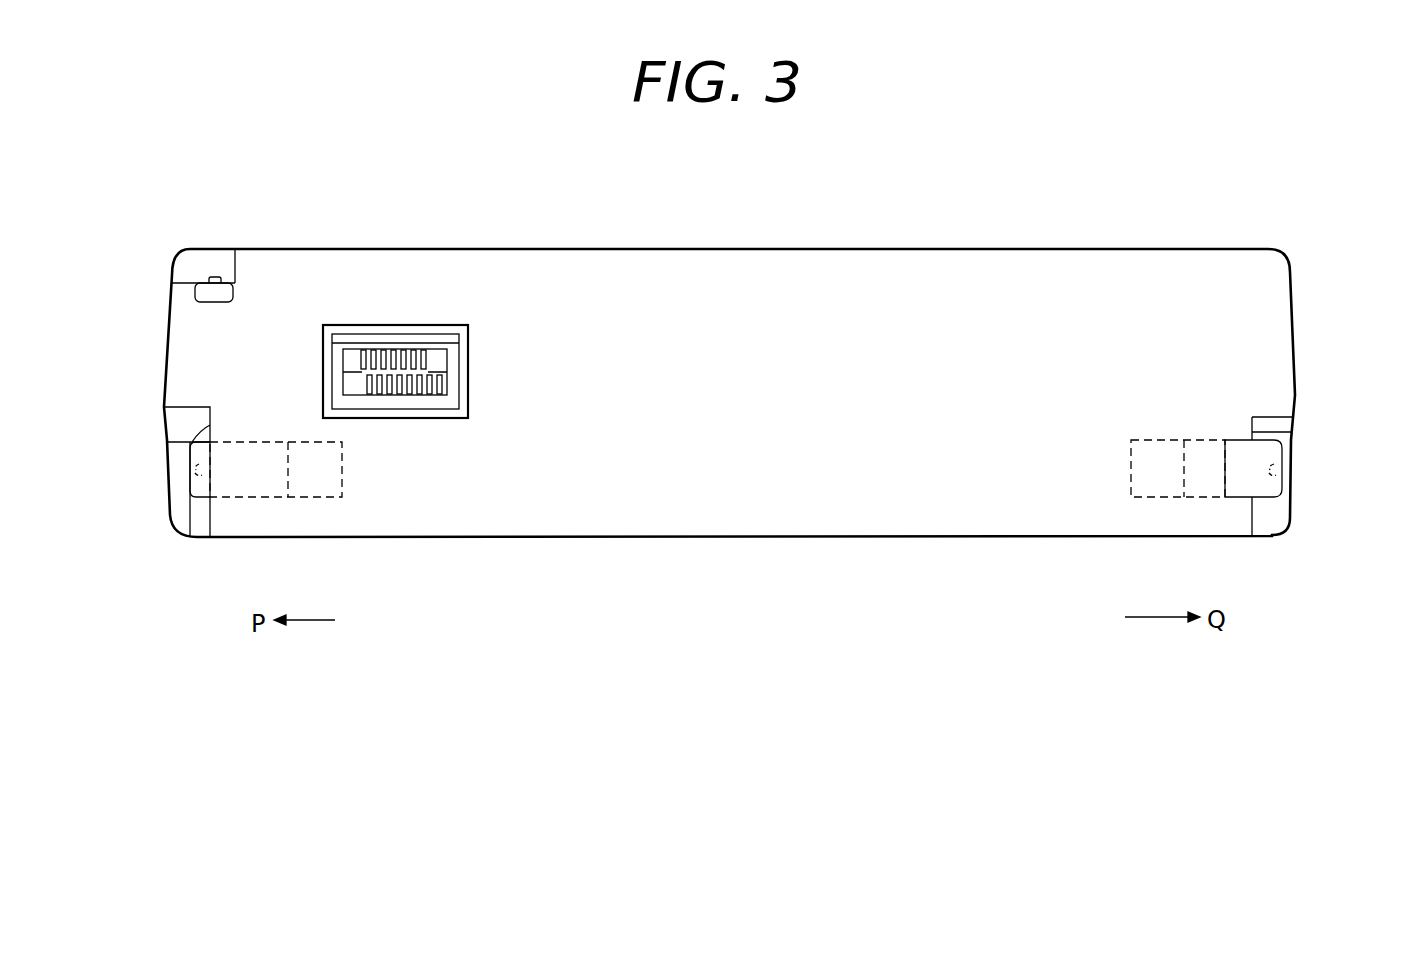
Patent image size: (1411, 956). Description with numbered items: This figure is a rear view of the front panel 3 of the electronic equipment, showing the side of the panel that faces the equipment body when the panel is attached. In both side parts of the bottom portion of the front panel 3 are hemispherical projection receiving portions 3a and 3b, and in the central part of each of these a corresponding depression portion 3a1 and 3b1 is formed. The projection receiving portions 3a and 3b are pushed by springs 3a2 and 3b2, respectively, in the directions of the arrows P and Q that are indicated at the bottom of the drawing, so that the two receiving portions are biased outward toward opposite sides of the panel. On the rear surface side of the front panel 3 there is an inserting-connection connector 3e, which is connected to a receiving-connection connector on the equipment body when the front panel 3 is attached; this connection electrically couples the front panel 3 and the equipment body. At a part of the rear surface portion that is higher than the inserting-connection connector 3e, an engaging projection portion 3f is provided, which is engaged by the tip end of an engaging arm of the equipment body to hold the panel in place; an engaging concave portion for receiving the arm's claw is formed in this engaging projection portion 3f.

The front panel 3 is at (852, 220).
The projection receiving portion 3a is at (243, 497).
The depression portion 3a1 is at (195, 470).
The spring 3a2 is at (335, 497).
The projection receiving portion 3b is at (1245, 492).
The depression portion 3b1 is at (1270, 466).
The spring 3b2 is at (1131, 497).
The inserting-connection connector 3e is at (468, 410).
The engaging projection portion 3f is at (233, 302).